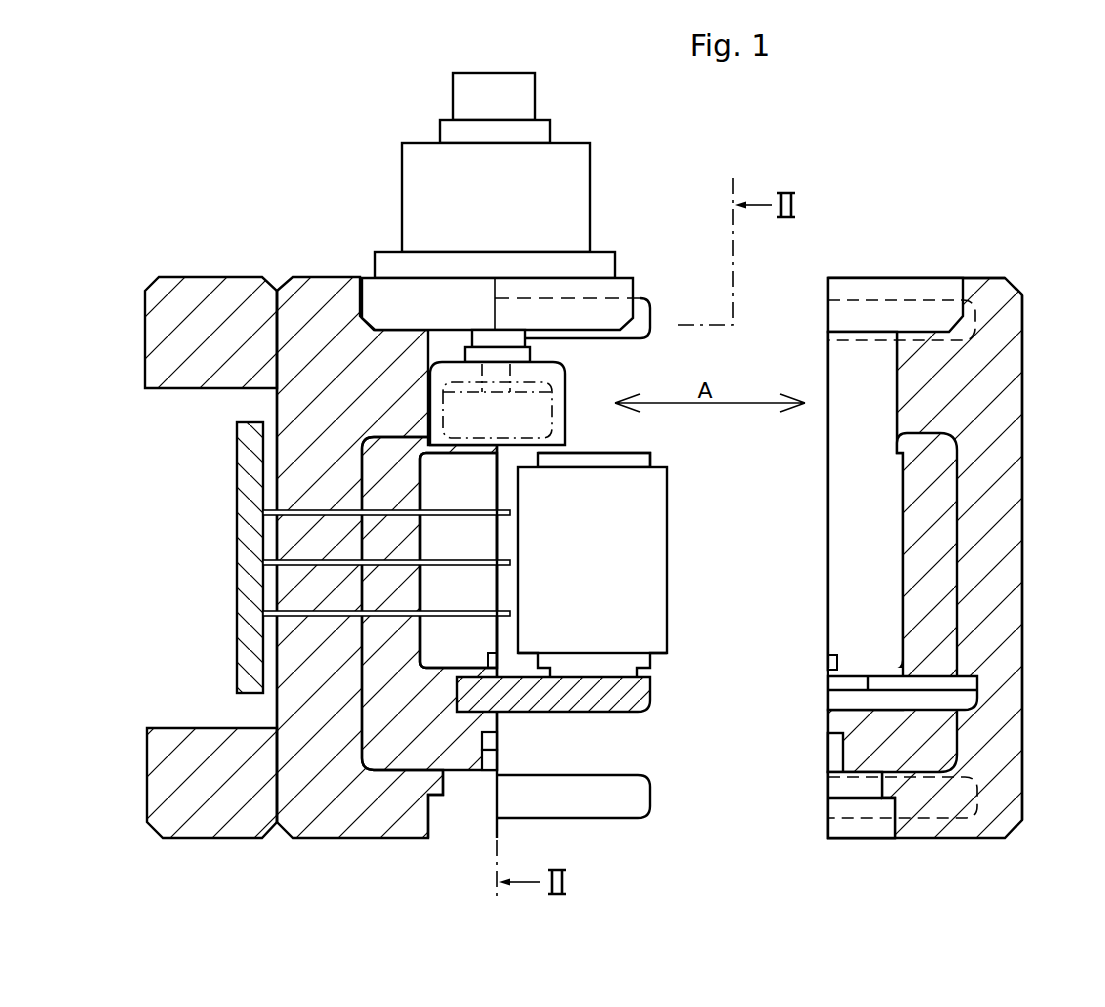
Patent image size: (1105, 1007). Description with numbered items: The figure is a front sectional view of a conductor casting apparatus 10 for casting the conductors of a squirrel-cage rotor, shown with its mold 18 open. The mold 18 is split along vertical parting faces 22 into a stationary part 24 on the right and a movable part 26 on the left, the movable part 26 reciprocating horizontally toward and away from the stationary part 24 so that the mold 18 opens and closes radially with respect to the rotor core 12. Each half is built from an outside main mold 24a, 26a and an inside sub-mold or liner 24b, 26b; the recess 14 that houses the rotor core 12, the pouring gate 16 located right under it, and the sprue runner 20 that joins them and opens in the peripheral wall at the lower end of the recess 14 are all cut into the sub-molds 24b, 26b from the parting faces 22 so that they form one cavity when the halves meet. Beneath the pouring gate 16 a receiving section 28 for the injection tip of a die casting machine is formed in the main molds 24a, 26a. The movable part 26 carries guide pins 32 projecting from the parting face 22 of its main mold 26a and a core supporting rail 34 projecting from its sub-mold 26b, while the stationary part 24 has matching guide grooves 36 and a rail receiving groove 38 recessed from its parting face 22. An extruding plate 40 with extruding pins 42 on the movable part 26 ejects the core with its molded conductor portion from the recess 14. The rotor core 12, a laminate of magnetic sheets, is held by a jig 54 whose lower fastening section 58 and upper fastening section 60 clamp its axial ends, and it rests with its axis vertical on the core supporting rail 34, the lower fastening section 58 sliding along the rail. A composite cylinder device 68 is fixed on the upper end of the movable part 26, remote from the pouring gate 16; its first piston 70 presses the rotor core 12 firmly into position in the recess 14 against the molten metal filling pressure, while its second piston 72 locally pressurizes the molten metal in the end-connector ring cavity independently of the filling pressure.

The conductor casting apparatus 10 is at (738, 158).
The rotor core 12 is at (676, 532).
The recess 14 is at (420, 632).
The pouring gate 16 is at (497, 755).
The mold 18 is at (328, 272).
The sprue runner 20 is at (492, 663).
The parting faces 22 is at (500, 830).
The stationary part 24 is at (1022, 420).
The main mold of stationary part 24a is at (1000, 470).
The sub-mold of stationary part 24b is at (912, 545).
The movable part 26 is at (277, 408).
The main mold of movable part 26a is at (290, 705).
The sub-mold of movable part 26b is at (395, 745).
The receiving section 28 is at (432, 820).
The guide pins 32 is at (648, 305).
The core supporting rail 34 is at (635, 712).
The guide grooves 36 is at (850, 298).
The rail receiving groove 38 is at (850, 705).
The extruding plate 40 is at (240, 578).
The extruding pins 42 is at (307, 618).
The jig 54 is at (660, 455).
The lower fastening section 58 is at (650, 660).
The upper fastening section 60 is at (598, 453).
The composite cylinder device 68 is at (408, 136).
The first piston 70 is at (532, 412).
The second piston 72 is at (577, 362).